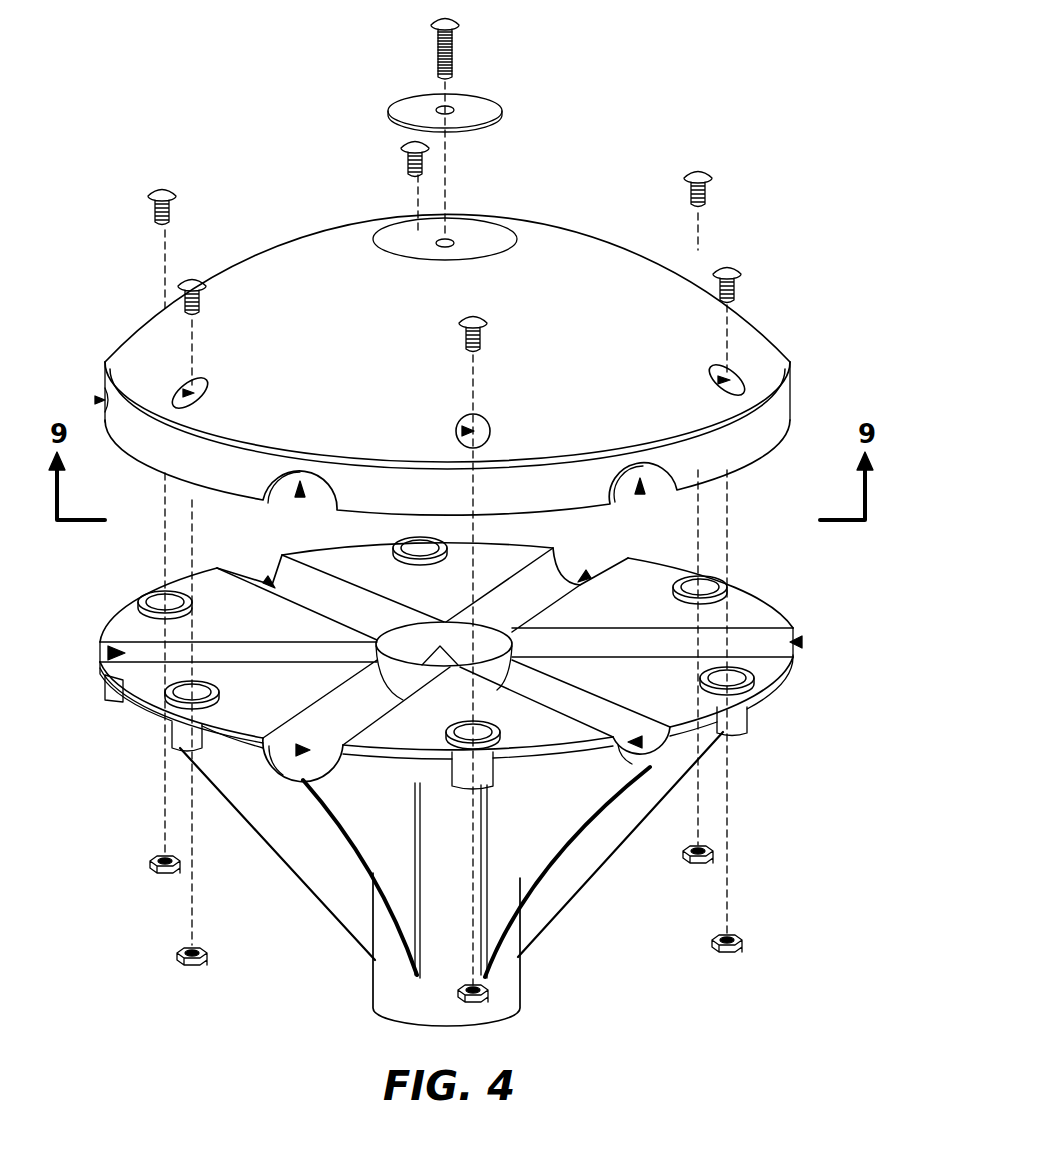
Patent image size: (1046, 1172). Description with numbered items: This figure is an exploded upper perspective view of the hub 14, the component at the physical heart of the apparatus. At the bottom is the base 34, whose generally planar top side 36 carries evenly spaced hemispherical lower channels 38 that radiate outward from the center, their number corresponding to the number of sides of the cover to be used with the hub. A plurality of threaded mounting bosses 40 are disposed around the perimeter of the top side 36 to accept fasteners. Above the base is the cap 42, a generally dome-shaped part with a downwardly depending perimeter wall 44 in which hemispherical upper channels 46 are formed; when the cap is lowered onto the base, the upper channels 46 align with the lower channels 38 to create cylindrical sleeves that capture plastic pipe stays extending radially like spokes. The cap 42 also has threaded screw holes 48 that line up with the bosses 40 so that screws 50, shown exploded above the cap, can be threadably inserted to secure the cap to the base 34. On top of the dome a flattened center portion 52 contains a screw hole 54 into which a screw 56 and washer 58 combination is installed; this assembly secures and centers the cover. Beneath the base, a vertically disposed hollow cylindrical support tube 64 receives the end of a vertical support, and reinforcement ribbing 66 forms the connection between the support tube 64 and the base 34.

The hub 14 is at (683, 41).
The base 34 is at (153, 714).
The top side 36 is at (748, 655).
The hemispherical lower channels 38 is at (266, 580).
The threaded mounting bosses 40 is at (155, 590).
The cap 42 is at (323, 243).
The perimeter wall 44 is at (783, 408).
The hemispherical upper channels 46 is at (95, 400).
The threaded screw holes 48 is at (183, 387).
The screws 50 is at (150, 195).
The flattened center portion 52 is at (487, 242).
The screw hole 54 is at (450, 238).
The screw 56 is at (453, 55).
The washer 58 is at (480, 100).
The hollow cylindrical support tube 64 is at (383, 978).
The reinforcement ribbing 66 is at (342, 895).